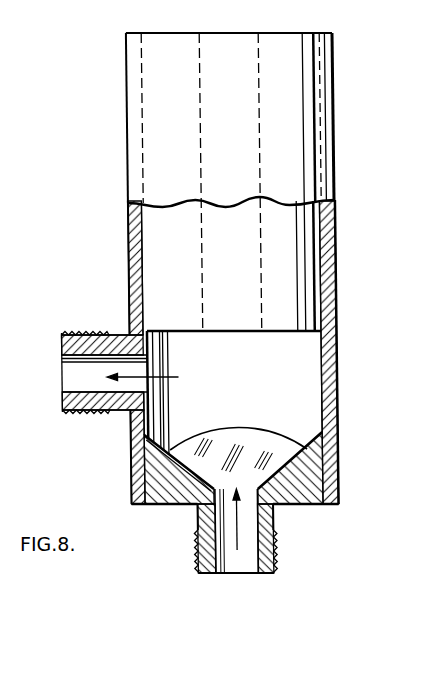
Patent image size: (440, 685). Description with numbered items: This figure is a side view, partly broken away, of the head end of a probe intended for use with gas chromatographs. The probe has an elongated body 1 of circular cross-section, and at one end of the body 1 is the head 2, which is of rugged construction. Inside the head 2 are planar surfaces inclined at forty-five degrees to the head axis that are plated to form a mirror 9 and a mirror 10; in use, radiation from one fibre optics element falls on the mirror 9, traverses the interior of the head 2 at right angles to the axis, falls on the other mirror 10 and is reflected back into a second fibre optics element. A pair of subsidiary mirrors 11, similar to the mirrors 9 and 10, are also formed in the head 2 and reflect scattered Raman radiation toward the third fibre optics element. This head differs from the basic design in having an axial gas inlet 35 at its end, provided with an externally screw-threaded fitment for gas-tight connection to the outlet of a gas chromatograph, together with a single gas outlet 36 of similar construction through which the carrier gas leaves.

The body 1 is at (334, 82).
The head 2 is at (334, 369).
The mirror 9 is at (164, 450).
The mirror 10 is at (303, 447).
The subsidiary mirrors 11 is at (217, 450).
The axial gas inlet 35 is at (239, 525).
The gas outlet 36 is at (70, 376).